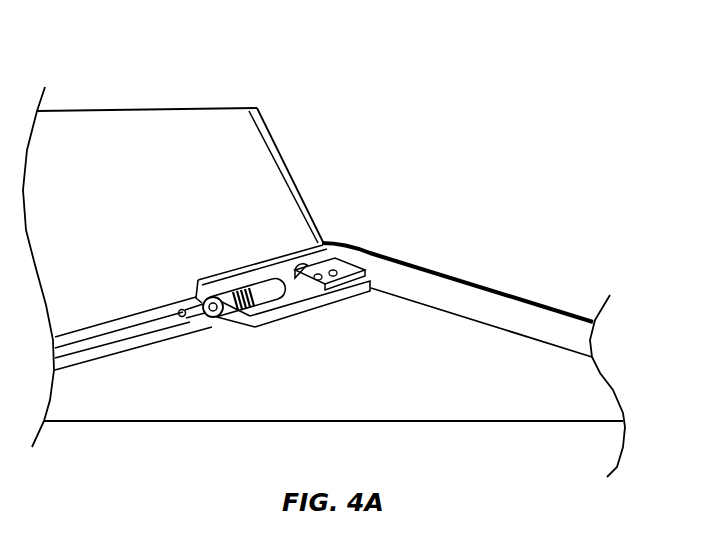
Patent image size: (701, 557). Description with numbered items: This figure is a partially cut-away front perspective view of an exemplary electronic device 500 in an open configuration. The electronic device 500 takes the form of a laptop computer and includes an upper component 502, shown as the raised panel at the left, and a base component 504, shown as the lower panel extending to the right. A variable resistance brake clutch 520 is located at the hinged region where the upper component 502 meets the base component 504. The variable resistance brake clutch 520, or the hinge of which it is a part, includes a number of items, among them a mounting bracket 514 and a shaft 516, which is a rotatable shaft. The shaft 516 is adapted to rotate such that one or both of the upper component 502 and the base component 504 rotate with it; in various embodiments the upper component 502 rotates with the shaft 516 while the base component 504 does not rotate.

The electronic device 500 is at (530, 55).
The upper component 502 is at (92, 150).
The base component 504 is at (526, 401).
The mounting bracket 514 is at (342, 289).
The shaft 516 is at (203, 326).
The variable resistance brake clutch 520 is at (224, 254).